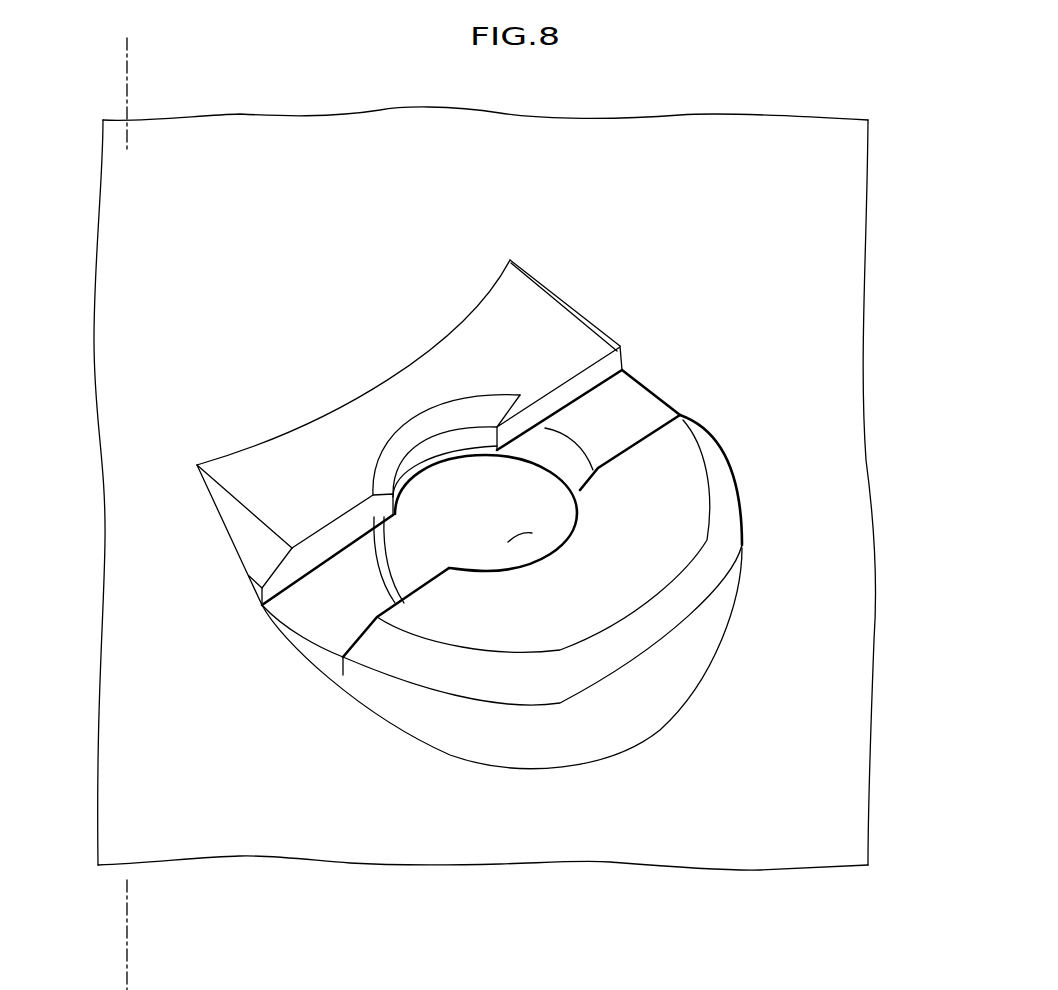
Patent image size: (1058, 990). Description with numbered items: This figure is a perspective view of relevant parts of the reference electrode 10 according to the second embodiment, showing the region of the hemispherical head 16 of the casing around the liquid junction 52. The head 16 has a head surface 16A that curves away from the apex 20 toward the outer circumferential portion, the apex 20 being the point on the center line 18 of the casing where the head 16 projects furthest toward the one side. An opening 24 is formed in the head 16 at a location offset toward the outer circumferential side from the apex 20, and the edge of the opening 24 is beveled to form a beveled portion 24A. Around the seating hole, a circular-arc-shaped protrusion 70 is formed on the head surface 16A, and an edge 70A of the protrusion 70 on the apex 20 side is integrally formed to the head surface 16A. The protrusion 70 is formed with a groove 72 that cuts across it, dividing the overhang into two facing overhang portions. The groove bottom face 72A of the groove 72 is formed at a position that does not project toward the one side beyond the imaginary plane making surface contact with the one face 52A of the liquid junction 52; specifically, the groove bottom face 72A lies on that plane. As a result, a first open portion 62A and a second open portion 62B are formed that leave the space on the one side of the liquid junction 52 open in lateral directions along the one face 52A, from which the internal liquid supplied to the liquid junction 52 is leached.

The reference electrode 10 is at (852, 198).
The head 16 is at (847, 328).
The head surface 16A is at (817, 442).
The center line 18 is at (126, 58).
The apex 20 is at (132, 145).
The opening 24 is at (441, 490).
The beveled portion 24A is at (402, 443).
The liquid junction 52 is at (402, 558).
The one face 52A is at (514, 540).
The first open portion 62A is at (615, 433).
The second open portion 62B is at (356, 604).
The protrusion 70 is at (742, 573).
The edge 70A is at (483, 295).
The groove 72 is at (655, 373).
The groove bottom face 72A is at (648, 415).